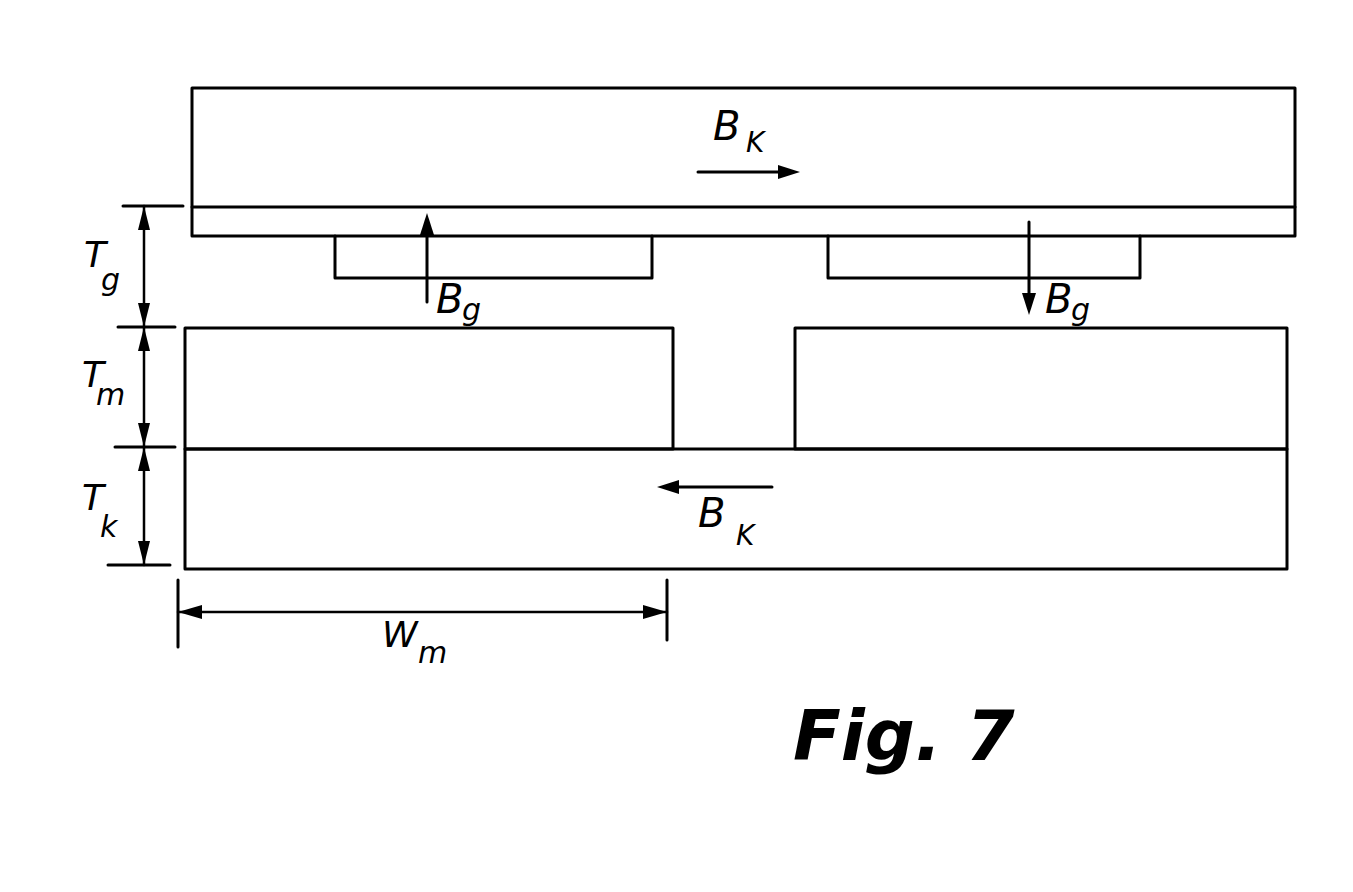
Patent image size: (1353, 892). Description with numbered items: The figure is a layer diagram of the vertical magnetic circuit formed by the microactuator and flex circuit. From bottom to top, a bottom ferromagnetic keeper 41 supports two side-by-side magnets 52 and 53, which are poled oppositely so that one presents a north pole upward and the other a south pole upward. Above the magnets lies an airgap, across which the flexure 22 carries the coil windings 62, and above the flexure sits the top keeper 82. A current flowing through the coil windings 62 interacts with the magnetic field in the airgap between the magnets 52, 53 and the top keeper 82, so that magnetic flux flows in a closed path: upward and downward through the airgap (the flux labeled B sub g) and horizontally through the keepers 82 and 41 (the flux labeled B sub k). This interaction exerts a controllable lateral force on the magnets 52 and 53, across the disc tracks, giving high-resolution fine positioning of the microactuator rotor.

The keeper 82 is at (1295, 125).
The flexure 22 is at (1295, 222).
The coil windings 62 is at (652, 265).
The magnet 52 is at (666, 382).
The magnet 53 is at (1272, 386).
The bottom ferromagnetic keeper 41 is at (1263, 521).